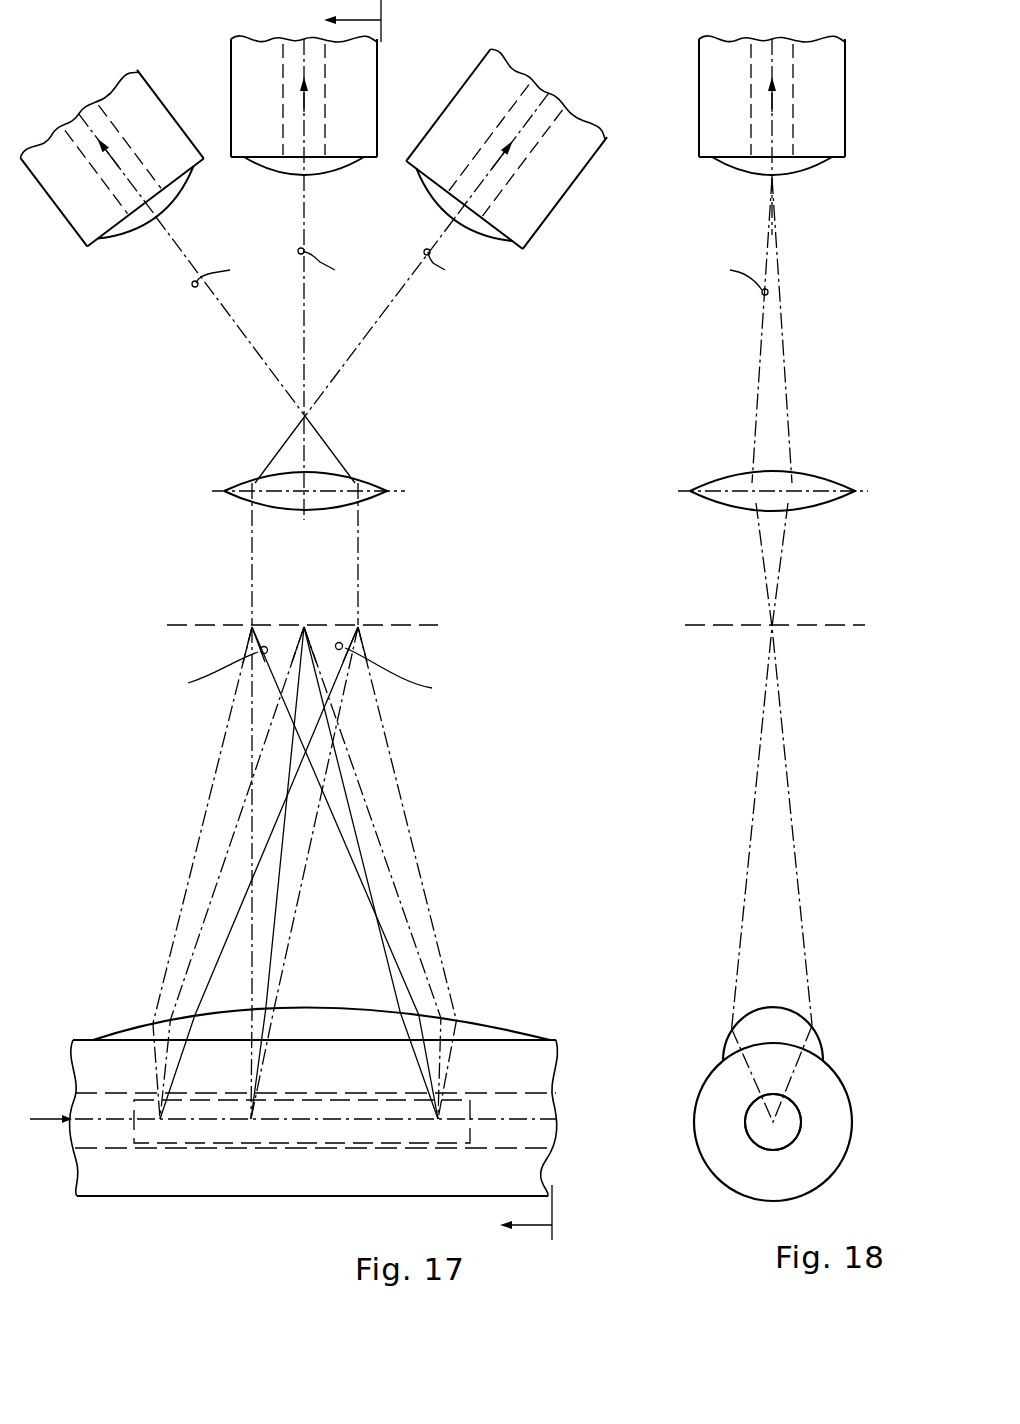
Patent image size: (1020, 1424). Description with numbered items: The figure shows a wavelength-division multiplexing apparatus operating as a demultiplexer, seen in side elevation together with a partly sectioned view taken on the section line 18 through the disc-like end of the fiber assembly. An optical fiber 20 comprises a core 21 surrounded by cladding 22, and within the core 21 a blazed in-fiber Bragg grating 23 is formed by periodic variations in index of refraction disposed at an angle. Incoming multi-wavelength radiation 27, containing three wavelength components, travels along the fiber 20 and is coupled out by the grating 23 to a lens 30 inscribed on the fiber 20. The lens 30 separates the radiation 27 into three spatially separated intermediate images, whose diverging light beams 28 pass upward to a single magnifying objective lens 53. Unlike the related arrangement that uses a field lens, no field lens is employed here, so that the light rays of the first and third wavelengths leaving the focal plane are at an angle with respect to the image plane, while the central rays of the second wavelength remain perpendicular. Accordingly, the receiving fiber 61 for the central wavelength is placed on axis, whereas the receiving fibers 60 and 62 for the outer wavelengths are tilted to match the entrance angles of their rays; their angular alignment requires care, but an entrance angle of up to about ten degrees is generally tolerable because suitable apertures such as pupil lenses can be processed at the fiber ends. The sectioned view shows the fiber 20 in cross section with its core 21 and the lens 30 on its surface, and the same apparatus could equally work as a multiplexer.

In FIG. 17, the section line 18— 18 is at (465, 620).
In FIG. 17, the optical fiber 20 is at (279, 1200).
In FIG. 18, the optical fiber 20 is at (708, 1178).
In FIG. 17, the core 21 is at (82, 106).
In FIG. 18, the core 21 is at (786, 46).
In FIG. 17, the cladding 22 is at (525, 1072).
In FIG. 17, the in-fiber Bragg grating (FBG) 23 is at (200, 1142).
In FIG. 18, the in-fiber Bragg grating (FBG) 23 is at (773, 1122).
In FIG. 17, the multi-wavelength radiation 27 is at (50, 1127).
In FIG. 17, the light beam 28 is at (304, 877).
In FIG. 18, the light beam 28 is at (752, 862).
In FIG. 17, the lens 30 is at (480, 1036).
In FIG. 18, the lens 30 is at (760, 1025).
In FIG. 17, the objective lens 53 is at (370, 485).
In FIG. 18, the objective lens 53 is at (805, 487).
In FIG. 17, the receiving fiber 60 is at (118, 88).
In FIG. 17, the receiving fiber 61 is at (358, 77).
In FIG. 18, the receiving fiber 61 is at (714, 110).
In FIG. 17, the receiving fiber 62 is at (585, 122).